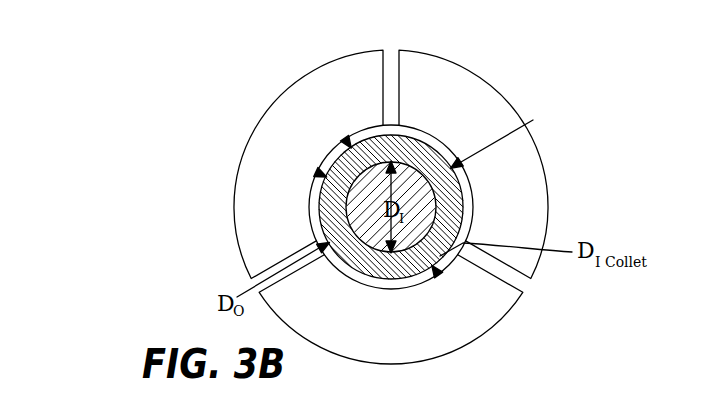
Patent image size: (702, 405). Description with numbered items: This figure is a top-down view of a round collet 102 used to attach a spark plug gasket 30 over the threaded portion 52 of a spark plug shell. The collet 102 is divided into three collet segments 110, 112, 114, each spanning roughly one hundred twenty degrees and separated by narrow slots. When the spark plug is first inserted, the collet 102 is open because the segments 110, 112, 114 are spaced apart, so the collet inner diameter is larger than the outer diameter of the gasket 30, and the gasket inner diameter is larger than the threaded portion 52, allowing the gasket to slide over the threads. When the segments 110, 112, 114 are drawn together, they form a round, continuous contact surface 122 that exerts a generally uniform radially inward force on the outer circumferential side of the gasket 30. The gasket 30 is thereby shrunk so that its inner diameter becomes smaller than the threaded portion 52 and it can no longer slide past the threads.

The collet 102 is at (200, 177).
The collet segment 110 is at (475, 102).
The collet segment 112 is at (472, 312).
The collet segment 114 is at (275, 127).
The spark plug gasket 30 is at (443, 184).
The threaded portion 52 is at (468, 208).
The contact surface 122 is at (331, 217).